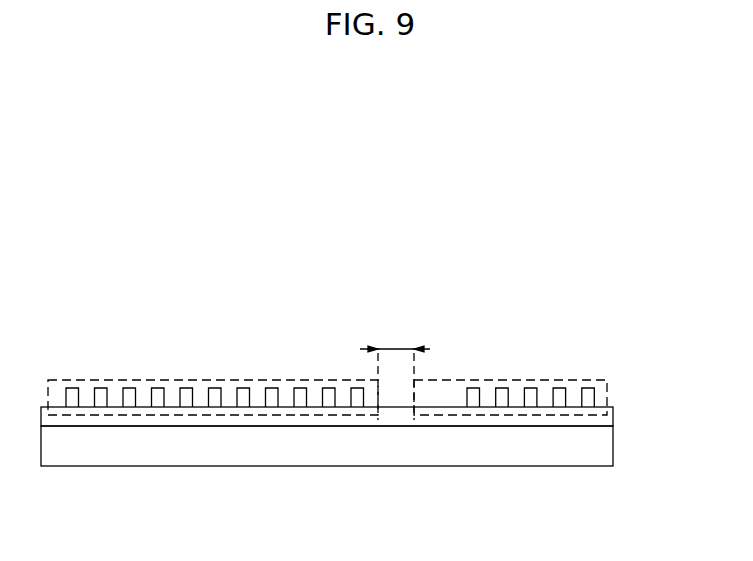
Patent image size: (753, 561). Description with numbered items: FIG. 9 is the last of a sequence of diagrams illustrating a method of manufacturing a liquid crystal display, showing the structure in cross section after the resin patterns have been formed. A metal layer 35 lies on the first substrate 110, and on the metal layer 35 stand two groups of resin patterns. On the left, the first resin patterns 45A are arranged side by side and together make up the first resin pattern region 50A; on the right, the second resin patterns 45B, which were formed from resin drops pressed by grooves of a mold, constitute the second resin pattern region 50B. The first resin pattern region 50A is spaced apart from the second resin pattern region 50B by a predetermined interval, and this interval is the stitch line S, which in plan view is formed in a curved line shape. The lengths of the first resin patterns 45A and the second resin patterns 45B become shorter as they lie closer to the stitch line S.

The first substrate 110 is at (613, 456).
The metal layer 35 is at (613, 417).
The first resin patterns 45A is at (102, 403).
The second resin patterns 45B is at (476, 403).
The first resin pattern region 50A is at (200, 381).
The second resin pattern region 50B is at (503, 381).
The stitch line S is at (395, 371).